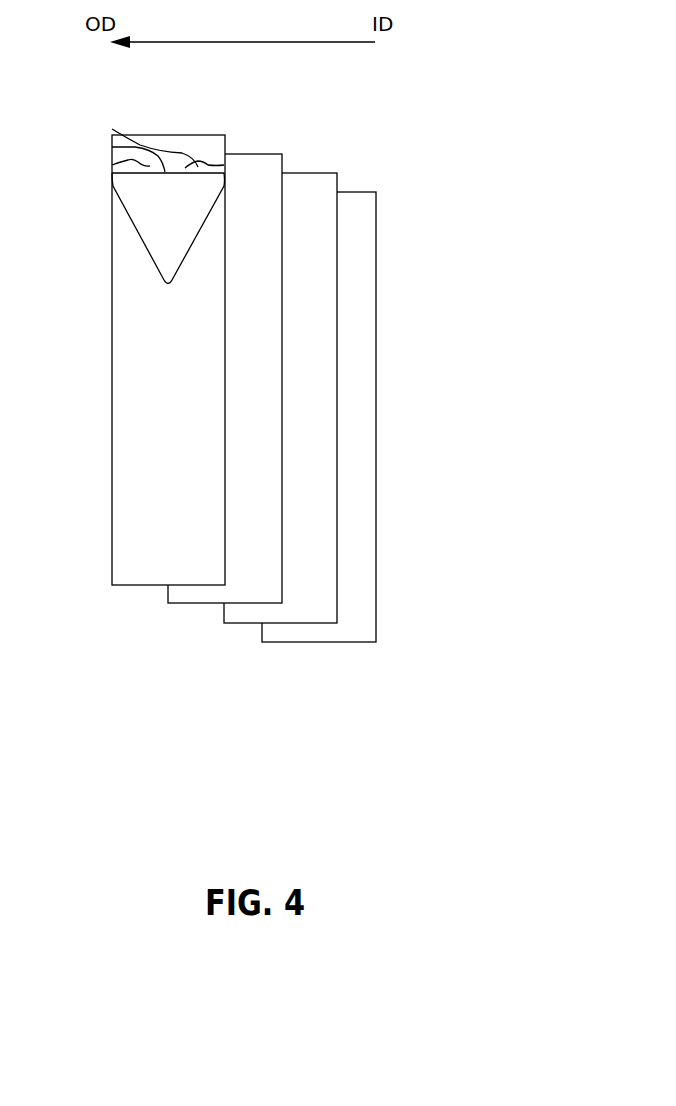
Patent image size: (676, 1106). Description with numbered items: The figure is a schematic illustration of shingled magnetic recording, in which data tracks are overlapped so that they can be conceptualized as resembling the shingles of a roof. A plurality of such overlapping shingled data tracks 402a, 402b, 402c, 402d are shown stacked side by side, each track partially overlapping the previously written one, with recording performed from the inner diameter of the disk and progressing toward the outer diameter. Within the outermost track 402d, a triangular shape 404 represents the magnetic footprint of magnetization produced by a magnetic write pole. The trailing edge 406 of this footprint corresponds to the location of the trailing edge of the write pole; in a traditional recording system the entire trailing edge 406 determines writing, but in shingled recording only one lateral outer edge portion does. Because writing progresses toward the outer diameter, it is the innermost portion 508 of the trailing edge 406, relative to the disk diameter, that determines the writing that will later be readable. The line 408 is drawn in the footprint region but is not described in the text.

The shingled data track 402a is at (365, 192).
The shingled data track 402b is at (323, 173).
The shingled data track 402c is at (247, 154).
The shingled data track 402d is at (153, 135).
The triangular shape 404 is at (128, 222).
The trailing edge 406 is at (112, 147).
The material boundary 408 is at (112, 165).
The innermost portion 508 is at (112, 129).